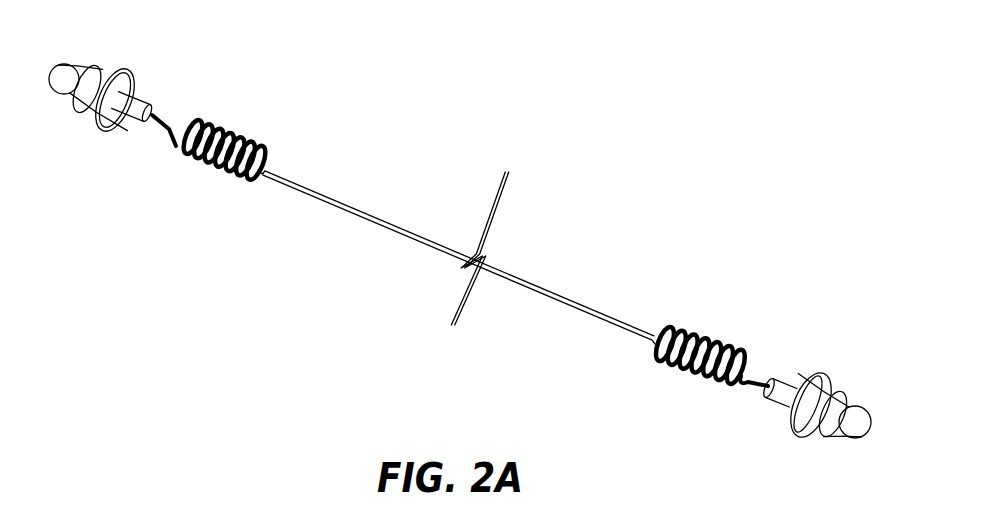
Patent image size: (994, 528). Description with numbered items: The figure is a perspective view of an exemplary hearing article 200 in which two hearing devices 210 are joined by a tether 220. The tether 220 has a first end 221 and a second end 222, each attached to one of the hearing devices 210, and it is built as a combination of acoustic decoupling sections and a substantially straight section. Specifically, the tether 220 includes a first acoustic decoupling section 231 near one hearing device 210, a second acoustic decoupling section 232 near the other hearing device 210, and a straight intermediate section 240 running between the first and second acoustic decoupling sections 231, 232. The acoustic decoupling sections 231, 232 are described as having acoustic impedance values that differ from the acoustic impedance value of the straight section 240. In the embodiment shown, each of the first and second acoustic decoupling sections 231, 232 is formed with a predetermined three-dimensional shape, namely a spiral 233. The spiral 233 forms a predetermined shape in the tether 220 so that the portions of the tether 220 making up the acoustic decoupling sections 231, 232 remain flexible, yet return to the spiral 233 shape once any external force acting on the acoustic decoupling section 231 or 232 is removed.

The hearing article 200 is at (636, 165).
The hearing device 210 is at (78, 73).
The tether 220 is at (506, 262).
The first end 221 is at (167, 118).
The second end 222 is at (757, 374).
The first acoustic decoupling section 231 is at (236, 127).
The second acoustic decoupling section 232 is at (708, 332).
The spiral 233 is at (215, 163).
The straight intermediate section 240 is at (420, 231).